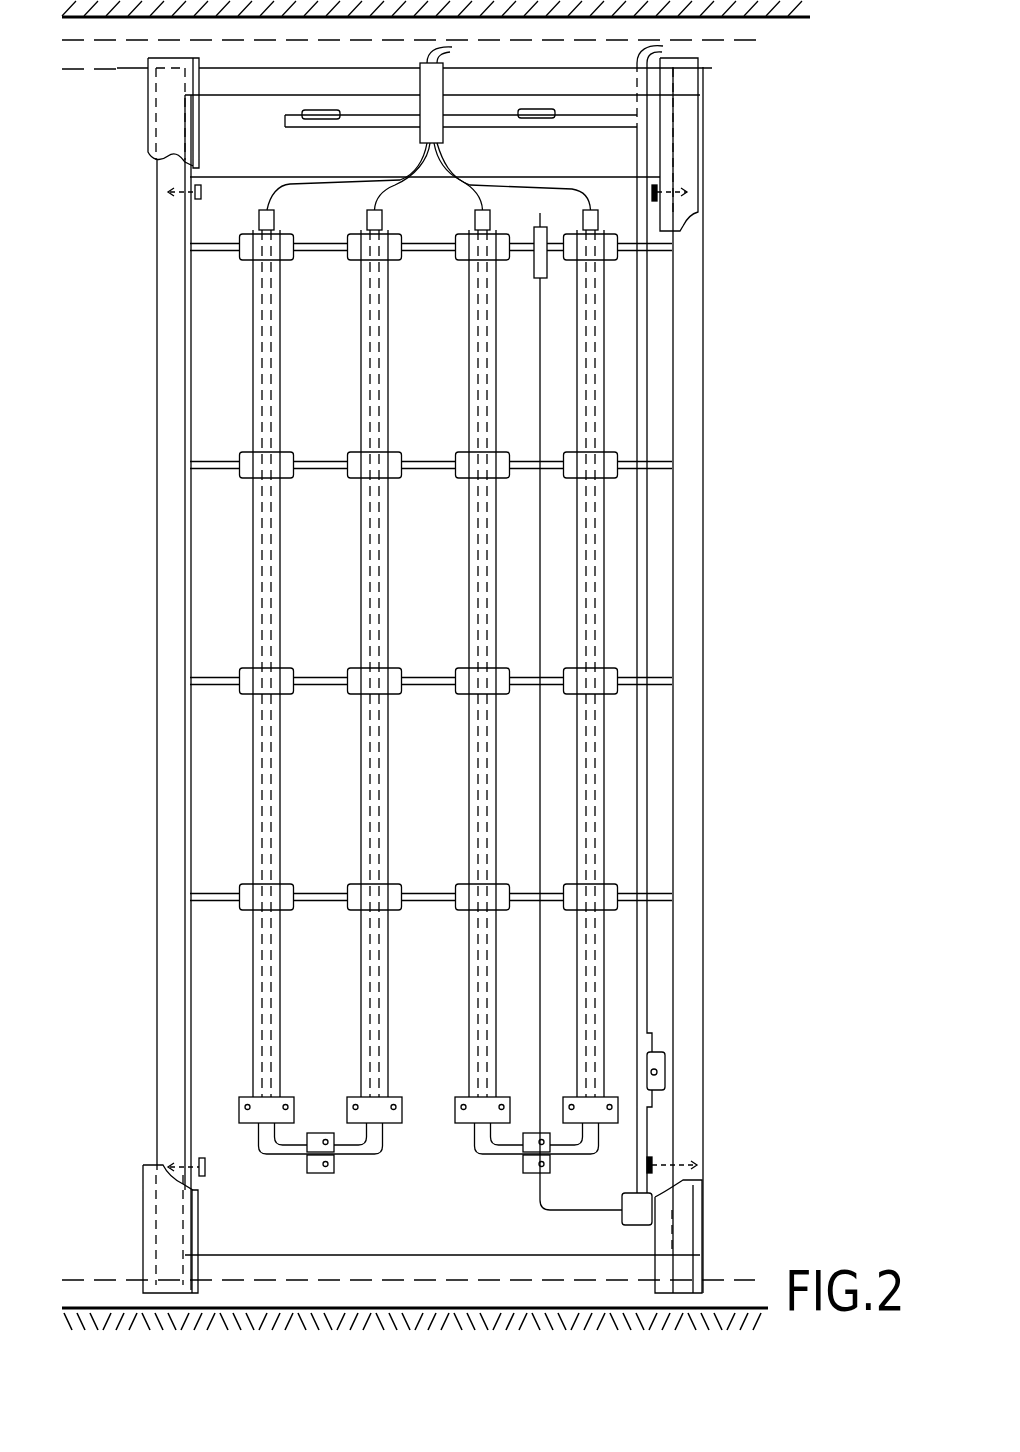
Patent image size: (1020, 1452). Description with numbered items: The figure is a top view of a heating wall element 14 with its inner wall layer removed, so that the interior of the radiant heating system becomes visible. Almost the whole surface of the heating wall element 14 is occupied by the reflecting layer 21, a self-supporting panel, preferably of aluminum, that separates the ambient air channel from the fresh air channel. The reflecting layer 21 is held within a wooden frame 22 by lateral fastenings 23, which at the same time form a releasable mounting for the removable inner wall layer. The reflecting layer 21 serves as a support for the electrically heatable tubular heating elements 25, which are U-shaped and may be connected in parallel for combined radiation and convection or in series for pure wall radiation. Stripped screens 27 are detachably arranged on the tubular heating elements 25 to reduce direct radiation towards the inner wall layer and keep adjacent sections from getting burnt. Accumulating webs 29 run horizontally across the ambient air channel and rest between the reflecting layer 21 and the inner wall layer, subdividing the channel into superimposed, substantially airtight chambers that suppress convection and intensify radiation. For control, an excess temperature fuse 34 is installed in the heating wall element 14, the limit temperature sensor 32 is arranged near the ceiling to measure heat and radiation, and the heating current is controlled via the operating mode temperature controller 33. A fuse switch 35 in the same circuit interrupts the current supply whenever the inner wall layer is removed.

The heating wall element 14 is at (713, 352).
The reflecting layer 21 is at (228, 338).
The wooden frame 22 is at (175, 503).
The lateral fastenings 23 is at (190, 203).
The tubular heating element 25 is at (272, 1015).
The stripped screen 27 is at (364, 752).
The accumulating web 29 is at (327, 893).
The limit temperature sensor 32 is at (547, 262).
The operating mode temperature controller 33 is at (655, 1200).
The excess temperature fuse 34 is at (325, 119).
The fuse switch 35 is at (665, 1070).